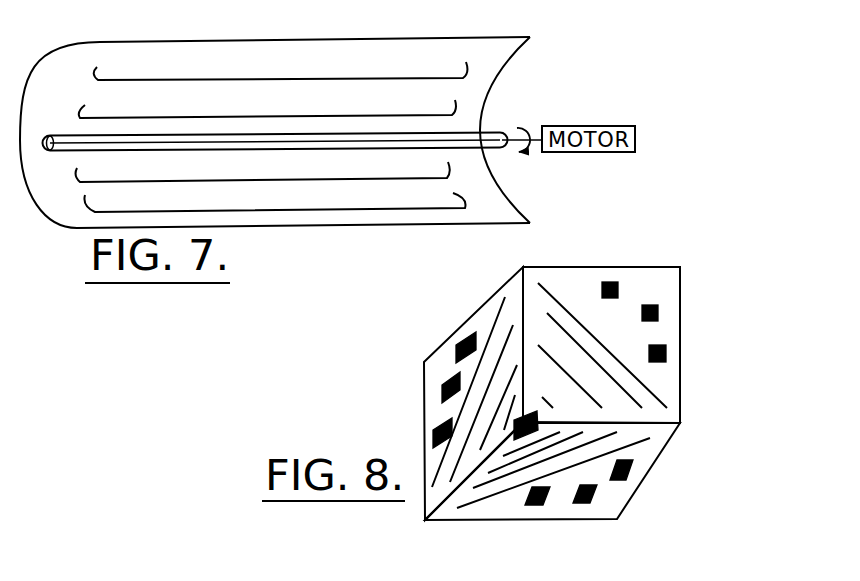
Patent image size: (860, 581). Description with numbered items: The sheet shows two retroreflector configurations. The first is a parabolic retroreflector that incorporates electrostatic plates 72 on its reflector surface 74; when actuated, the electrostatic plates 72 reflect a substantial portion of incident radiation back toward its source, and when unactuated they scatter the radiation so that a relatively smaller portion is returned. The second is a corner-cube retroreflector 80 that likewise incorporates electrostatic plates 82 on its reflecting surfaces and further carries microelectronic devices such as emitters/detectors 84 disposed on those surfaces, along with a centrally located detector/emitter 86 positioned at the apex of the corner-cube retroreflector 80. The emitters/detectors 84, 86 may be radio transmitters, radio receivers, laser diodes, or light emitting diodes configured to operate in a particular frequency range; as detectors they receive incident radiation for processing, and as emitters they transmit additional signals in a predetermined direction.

In FIG. 7, the electrostatic plates 72 is at (75, 82).
In FIG. 7, the reflector surface 74 is at (68, 213).
In FIG. 8, the corner-cube retroreflector 80 is at (577, 370).
In FIG. 8, the electrostatic plates 82 is at (492, 311).
In FIG. 8, the emitters/detectors 84 is at (441, 394).
In FIG. 8, the detector/emitter 86 is at (523, 416).